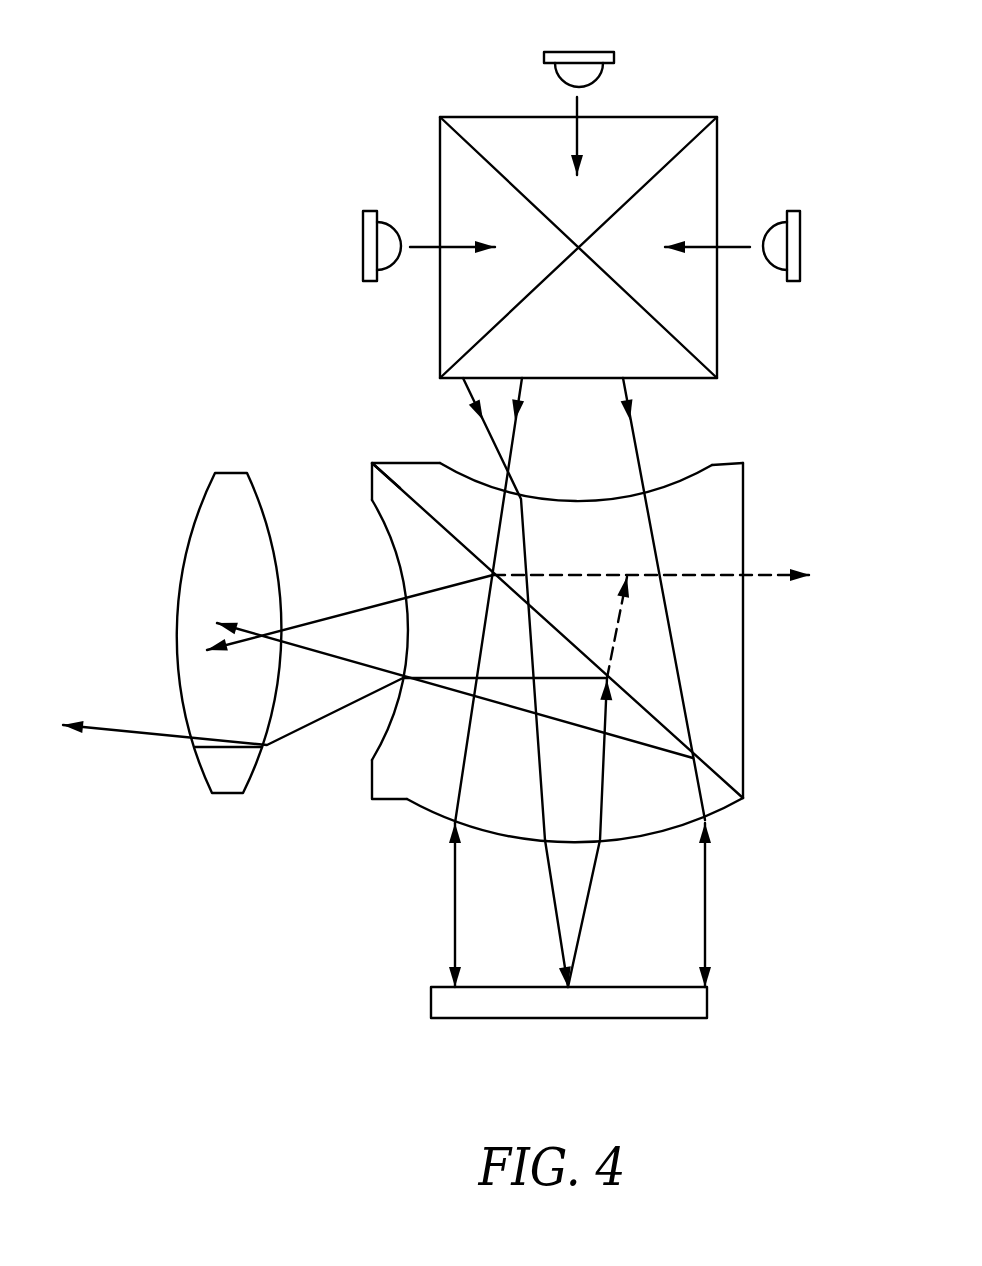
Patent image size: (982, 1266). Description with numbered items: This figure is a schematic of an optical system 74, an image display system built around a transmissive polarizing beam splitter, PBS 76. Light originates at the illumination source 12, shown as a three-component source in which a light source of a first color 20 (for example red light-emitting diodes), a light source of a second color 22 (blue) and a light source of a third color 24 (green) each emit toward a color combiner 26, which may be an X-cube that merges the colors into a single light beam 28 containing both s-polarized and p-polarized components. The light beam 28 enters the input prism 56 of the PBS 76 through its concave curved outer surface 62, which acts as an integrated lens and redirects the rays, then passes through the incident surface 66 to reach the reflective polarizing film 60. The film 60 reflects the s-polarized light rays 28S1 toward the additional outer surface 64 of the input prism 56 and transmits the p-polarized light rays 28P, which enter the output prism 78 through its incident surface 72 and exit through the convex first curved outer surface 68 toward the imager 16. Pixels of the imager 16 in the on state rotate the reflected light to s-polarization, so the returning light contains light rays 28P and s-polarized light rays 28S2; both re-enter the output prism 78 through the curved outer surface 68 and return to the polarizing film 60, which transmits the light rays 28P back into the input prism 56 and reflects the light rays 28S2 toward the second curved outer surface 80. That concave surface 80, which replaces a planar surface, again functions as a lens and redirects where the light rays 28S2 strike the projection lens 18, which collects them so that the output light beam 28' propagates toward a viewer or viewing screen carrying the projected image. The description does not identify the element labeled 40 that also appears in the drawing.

The illumination source 12 is at (750, 83).
The imager 16 is at (693, 998).
The projection lens 18 is at (228, 783).
The light source of a first color 20 is at (394, 238).
The light source of a second color 22 is at (587, 77).
The light source of a third color 24 is at (775, 252).
The color combiner 26 is at (695, 177).
The light beam 28 is at (532, 679).
The output light beam 28' is at (399, 666).
The p-polarized light rays 28P is at (523, 933).
The s-polarized light rays 28S1 is at (764, 573).
The s-polarized light rays 28S2 is at (316, 719).
The polarizing beam splitter 40 is at (341, 508).
The input prism 56 is at (565, 698).
The reflective polarizing film 60 is at (730, 783).
The curved outer surface 62 is at (700, 467).
The additional outer surface 64 is at (744, 727).
The incident surface 66 is at (385, 484).
The first curved outer surface 68 is at (505, 838).
The incident surface 72 is at (386, 513).
The optical system 74 is at (345, 50).
The PBS 76 is at (824, 687).
The output prism 78 is at (412, 847).
The second curved outer surface 80 is at (368, 740).